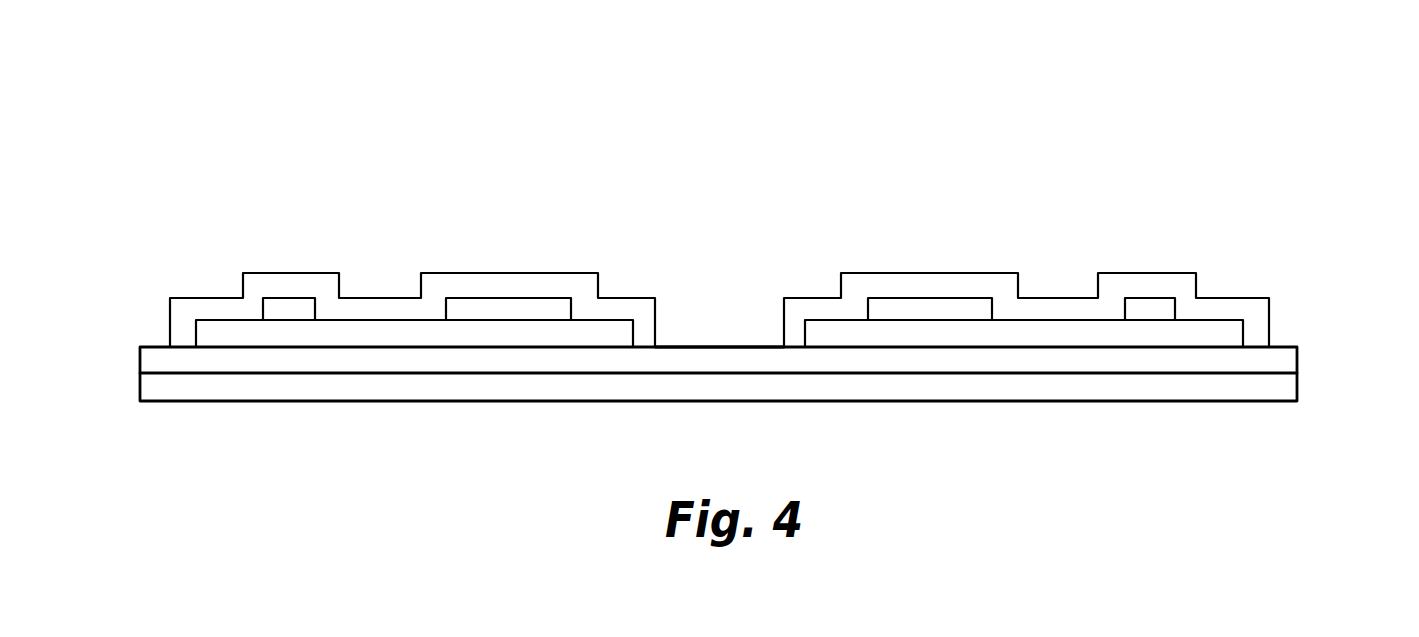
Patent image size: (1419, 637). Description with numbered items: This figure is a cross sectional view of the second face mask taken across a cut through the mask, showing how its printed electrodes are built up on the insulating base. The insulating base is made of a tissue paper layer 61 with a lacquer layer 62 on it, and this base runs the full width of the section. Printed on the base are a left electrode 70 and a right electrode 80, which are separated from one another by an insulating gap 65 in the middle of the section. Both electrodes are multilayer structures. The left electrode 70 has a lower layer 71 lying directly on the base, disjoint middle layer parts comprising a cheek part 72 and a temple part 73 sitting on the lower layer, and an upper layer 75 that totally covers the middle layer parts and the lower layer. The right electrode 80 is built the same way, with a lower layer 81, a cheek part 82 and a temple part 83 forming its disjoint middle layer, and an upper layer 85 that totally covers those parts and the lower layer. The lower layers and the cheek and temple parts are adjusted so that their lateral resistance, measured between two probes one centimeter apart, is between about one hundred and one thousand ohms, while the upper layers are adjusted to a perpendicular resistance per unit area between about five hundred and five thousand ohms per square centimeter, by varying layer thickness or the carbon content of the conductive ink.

The tissue paper layer 61 is at (832, 392).
The lacquer layer 62 is at (977, 362).
The insulating gap 65 is at (726, 330).
The left electrode 70 is at (432, 197).
The lower layer 71 is at (605, 332).
The cheek part 72 is at (500, 307).
The temple part 73 is at (281, 303).
The upper layer 75 is at (378, 310).
The right electrode 80 is at (1026, 193).
The lower layer 81 is at (815, 337).
The cheek part 82 is at (920, 307).
The temple part 83 is at (1162, 308).
The upper layer 85 is at (1068, 308).